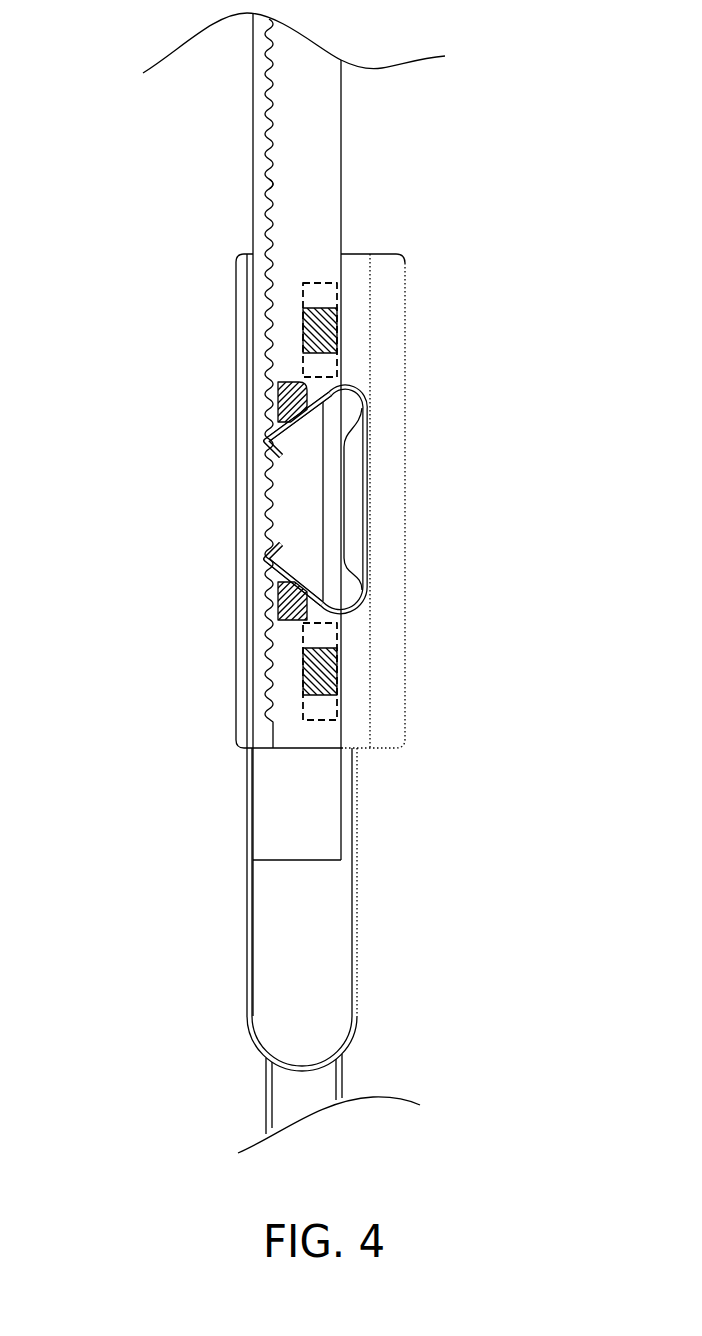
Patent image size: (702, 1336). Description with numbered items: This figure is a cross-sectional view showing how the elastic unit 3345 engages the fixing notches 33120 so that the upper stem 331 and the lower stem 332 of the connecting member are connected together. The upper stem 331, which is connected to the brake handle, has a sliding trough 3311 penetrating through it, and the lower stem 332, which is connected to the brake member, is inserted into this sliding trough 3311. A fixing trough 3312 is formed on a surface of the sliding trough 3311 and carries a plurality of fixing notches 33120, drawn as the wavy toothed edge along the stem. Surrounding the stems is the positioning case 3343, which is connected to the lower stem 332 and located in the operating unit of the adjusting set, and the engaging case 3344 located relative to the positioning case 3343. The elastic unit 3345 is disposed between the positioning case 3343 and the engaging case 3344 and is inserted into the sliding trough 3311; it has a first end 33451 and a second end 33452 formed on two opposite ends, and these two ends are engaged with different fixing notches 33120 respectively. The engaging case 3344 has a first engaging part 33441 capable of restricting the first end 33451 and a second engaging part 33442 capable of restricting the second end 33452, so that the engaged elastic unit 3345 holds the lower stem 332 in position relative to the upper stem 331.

The upper stem 331 is at (293, 514).
The sliding trough 3311 is at (307, 100).
The fixing trough 3312 is at (282, 383).
The fixing notches 33120 is at (268, 196).
The positioning case 3343 is at (387, 337).
The engaging case 3344 is at (225, 501).
The first engaging part 33441 is at (283, 397).
The second engaging part 33442 is at (283, 604).
The elastic unit 3345 is at (403, 499).
The first end 33451 is at (272, 442).
The second end 33452 is at (272, 560).
The lower stem 332 is at (285, 1097).